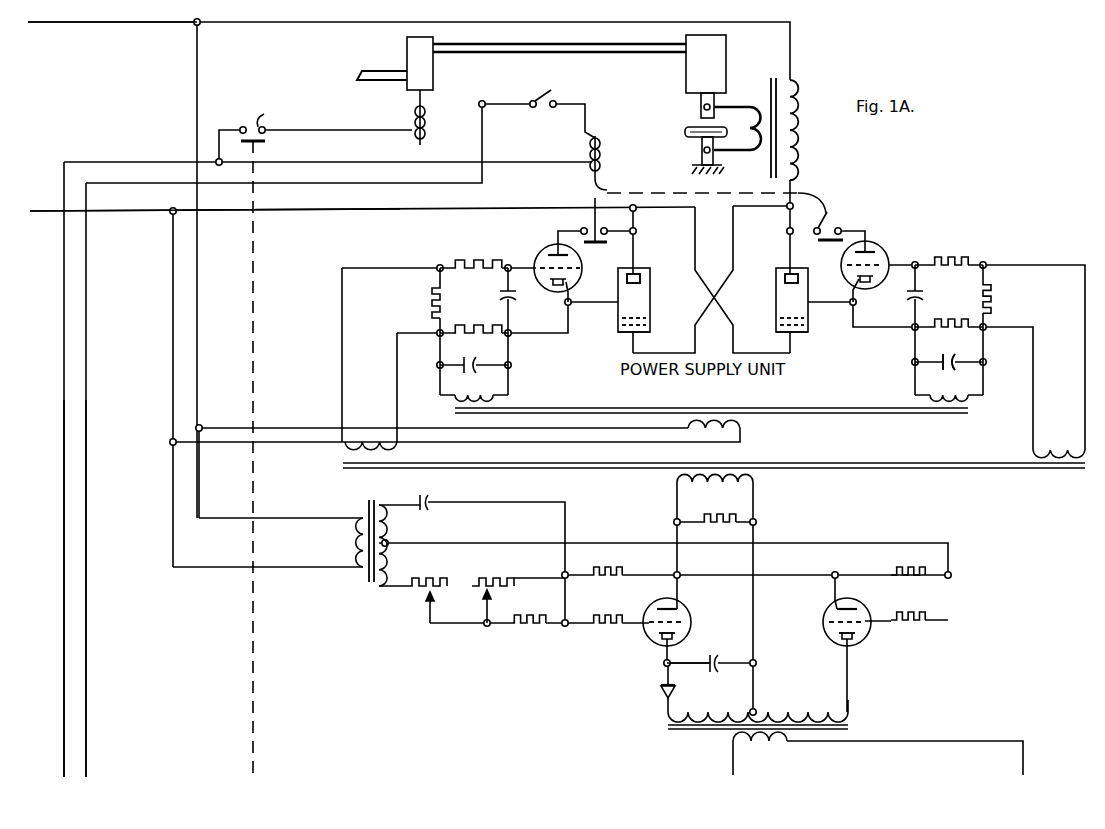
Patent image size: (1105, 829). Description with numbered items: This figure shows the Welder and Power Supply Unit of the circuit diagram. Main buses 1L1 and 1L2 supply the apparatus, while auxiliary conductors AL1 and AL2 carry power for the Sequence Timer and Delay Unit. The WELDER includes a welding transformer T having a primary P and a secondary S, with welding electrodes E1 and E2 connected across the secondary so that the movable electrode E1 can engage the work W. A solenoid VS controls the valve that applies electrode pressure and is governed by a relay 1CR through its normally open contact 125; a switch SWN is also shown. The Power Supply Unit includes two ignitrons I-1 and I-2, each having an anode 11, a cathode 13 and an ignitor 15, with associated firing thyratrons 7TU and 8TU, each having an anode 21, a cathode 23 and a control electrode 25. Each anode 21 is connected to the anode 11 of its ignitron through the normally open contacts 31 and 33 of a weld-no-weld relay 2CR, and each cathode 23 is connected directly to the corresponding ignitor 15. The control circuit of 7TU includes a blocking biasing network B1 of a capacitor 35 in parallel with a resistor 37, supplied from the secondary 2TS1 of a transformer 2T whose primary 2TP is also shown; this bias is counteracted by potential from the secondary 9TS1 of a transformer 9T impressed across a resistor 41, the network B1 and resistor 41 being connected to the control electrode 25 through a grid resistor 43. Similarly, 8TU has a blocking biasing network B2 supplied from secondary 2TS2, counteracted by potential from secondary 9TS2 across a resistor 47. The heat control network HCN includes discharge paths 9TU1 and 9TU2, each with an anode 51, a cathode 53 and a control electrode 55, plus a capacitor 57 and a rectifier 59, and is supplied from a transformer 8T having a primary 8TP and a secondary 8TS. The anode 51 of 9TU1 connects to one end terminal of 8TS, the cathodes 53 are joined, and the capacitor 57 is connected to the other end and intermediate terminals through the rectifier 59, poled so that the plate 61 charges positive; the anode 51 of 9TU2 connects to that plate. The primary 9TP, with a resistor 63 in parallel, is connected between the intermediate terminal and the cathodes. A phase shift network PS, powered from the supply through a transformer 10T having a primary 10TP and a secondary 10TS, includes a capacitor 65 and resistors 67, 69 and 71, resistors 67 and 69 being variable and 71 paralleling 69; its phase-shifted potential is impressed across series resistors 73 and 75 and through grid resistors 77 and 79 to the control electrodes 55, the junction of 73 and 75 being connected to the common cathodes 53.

The main bus 1L1 is at (256, 26).
The main bus 1L2 is at (390, 207).
The auxiliary conductor AL1 is at (63, 722).
The auxiliary conductor AL2 is at (88, 722).
The relay 1CR is at (255, 685).
The normally open contact 125 is at (257, 126).
The solenoid VS is at (414, 116).
The initiating switch SWN is at (561, 92).
The weld-no-weld relay 2CR is at (588, 152).
The Welder WELDER is at (541, 64).
The welding electrode E1 is at (700, 107).
The welding electrode E2 is at (700, 150).
The work W is at (686, 133).
The secondary S is at (750, 120).
The welding transformer T is at (772, 78).
The primary P is at (796, 105).
The normally open contact 33 is at (590, 228).
The normally open contact 31 is at (842, 218).
The firing thyratron 8TU is at (550, 251).
The firing thyratron 7TU is at (872, 245).
The anode 21 is at (572, 258).
The control electrode 25 is at (578, 268).
The cathode 23 is at (560, 297).
The resistor 47 is at (432, 302).
The blocking biasing network B2 is at (470, 357).
The secondary 2TS2 is at (492, 396).
The transformer 2T is at (848, 424).
The ignitron I-2 is at (650, 294).
The ignitron I-1 is at (776, 294).
The anode 11 is at (641, 279).
The ignitor 15 is at (621, 318).
The cathode 13 is at (642, 332).
The grid resistor 43 is at (958, 254).
The capacitor 35 is at (964, 315).
The resistor 41 is at (997, 300).
The blocking biasing network B1 is at (944, 352).
The resistor 37 is at (949, 355).
The secondary 2TS1 is at (968, 396).
The secondary 9TS1 is at (1032, 448).
The secondary 9TS2 is at (344, 444).
The transformer primary 2TP is at (740, 433).
The transformer 9T is at (886, 470).
The transformer 10T is at (367, 575).
The primary 10TP is at (353, 535).
The secondary 10TS is at (390, 564).
The capacitor 65 is at (427, 499).
The phase shift network PS is at (522, 534).
The variable resistor 67 is at (441, 586).
The variable resistor 69 is at (486, 579).
The resistor 71 is at (540, 612).
The grid resistor 79 is at (606, 612).
The resistor 75 is at (604, 571).
The primary 9TP is at (724, 486).
The resistor 63 is at (711, 510).
The resistor 73 is at (895, 569).
The grid resistor 77 is at (908, 609).
The discharge path 9TU2 is at (663, 651).
The discharge path 9TU1 is at (861, 647).
The cathode 53 is at (665, 599).
The control electrode 55 is at (686, 618).
The anode 51 is at (652, 638).
The heat control network HCN is at (748, 612).
The plate 61 is at (708, 662).
The capacitor 57 is at (716, 658).
The rectifier 59 is at (659, 693).
The secondary 8TS is at (779, 708).
The transformer 8T is at (669, 733).
The primary 8TP is at (750, 747).